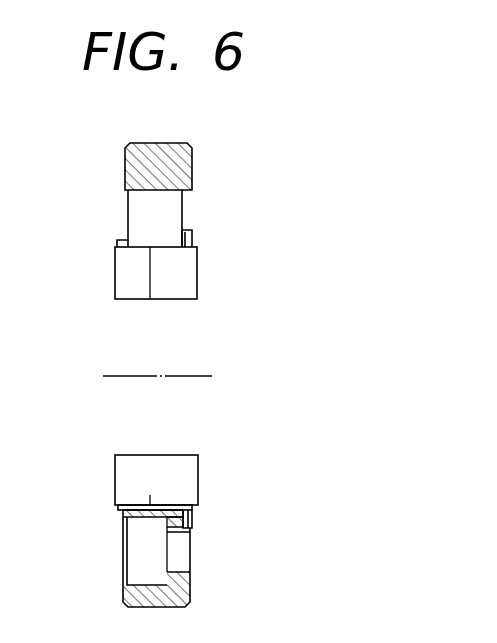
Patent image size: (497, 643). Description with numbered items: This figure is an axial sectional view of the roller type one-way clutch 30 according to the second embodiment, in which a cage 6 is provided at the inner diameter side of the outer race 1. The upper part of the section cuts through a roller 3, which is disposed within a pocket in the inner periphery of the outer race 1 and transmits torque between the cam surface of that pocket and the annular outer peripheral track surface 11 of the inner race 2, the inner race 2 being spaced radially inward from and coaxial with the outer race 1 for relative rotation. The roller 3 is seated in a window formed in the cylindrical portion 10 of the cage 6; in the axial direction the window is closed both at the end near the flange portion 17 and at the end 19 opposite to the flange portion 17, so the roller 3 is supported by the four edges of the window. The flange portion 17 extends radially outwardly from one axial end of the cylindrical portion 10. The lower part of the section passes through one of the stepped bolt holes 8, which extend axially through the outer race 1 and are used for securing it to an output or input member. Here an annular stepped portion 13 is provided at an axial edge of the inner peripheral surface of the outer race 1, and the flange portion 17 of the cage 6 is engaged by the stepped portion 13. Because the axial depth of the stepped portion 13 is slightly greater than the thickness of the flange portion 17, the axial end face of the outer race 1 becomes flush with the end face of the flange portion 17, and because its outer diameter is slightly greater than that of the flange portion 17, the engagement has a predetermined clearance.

The roller type one-way clutch 30 is at (207, 160).
The outer race 1 is at (137, 150).
The roller 3 is at (135, 203).
The end 19 is at (117, 242).
The flange portion 17 is at (192, 236).
The inner race 2 is at (190, 276).
The outer peripheral track surface 11 is at (150, 252).
The cylindrical portion 10 is at (148, 505).
The cage 6 is at (118, 512).
The stepped portion 13 is at (175, 532).
The stepped bolt hole 8 is at (185, 572).